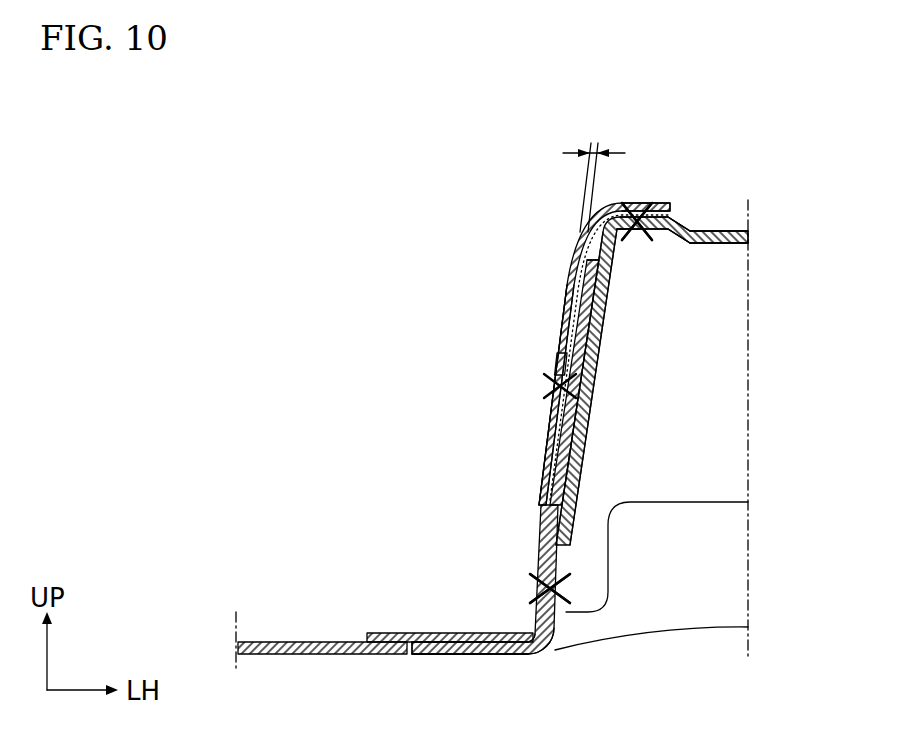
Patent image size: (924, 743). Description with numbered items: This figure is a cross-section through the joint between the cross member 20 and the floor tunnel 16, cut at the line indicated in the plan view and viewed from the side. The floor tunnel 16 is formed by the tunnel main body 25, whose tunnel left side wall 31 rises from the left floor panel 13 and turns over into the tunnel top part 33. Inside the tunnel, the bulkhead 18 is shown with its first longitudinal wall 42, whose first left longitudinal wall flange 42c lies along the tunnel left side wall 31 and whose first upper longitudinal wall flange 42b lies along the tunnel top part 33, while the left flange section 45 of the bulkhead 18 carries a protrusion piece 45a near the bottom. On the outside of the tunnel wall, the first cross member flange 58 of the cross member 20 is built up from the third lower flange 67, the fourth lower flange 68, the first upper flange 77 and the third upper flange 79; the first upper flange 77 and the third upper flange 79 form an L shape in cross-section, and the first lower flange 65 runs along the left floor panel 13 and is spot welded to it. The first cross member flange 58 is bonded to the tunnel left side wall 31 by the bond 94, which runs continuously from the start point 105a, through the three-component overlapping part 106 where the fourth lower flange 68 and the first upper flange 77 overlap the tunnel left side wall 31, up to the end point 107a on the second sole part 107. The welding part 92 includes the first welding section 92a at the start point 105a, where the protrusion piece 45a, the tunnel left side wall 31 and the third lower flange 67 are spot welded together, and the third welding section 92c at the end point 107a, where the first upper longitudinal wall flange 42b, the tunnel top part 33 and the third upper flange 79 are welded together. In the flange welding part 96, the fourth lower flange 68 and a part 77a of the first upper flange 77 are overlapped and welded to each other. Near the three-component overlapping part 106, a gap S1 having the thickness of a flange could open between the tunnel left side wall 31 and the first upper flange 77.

The left floor panel 13 is at (296, 642).
The floor tunnel 16 is at (778, 188).
The bulkhead 18 is at (708, 642).
The cross member 20 is at (490, 412).
The tunnel main body 25 is at (730, 218).
The tunnel left side wall 31 is at (549, 452).
The tunnel top part 33 is at (695, 228).
The first longitudinal wall 42 is at (752, 418).
The first upper longitudinal wall flange 42b is at (710, 245).
The first left longitudinal wall flange 42c is at (586, 440).
The left flange section 45 is at (450, 655).
The protrusion piece 45a is at (565, 614).
The first cross member flange 58 is at (558, 262).
The first lower flange 65 is at (403, 633).
The third lower flange 67 is at (540, 545).
The fourth lower flange 68 is at (593, 352).
The first upper flange 77 is at (556, 330).
The part of the first upper flange 77a is at (578, 415).
The third upper flange 79 is at (657, 203).
The welding part 92 is at (550, 588).
The first welding section 92a is at (562, 590).
The third welding section 92c is at (630, 242).
The bond 94 is at (572, 298).
The flange welding part 96 is at (548, 385).
The start point 105a is at (534, 583).
The three-component overlapping part 106 is at (562, 362).
The second sole part 107 is at (637, 221).
The end point 107a is at (638, 190).
The gap S1 is at (594, 175).